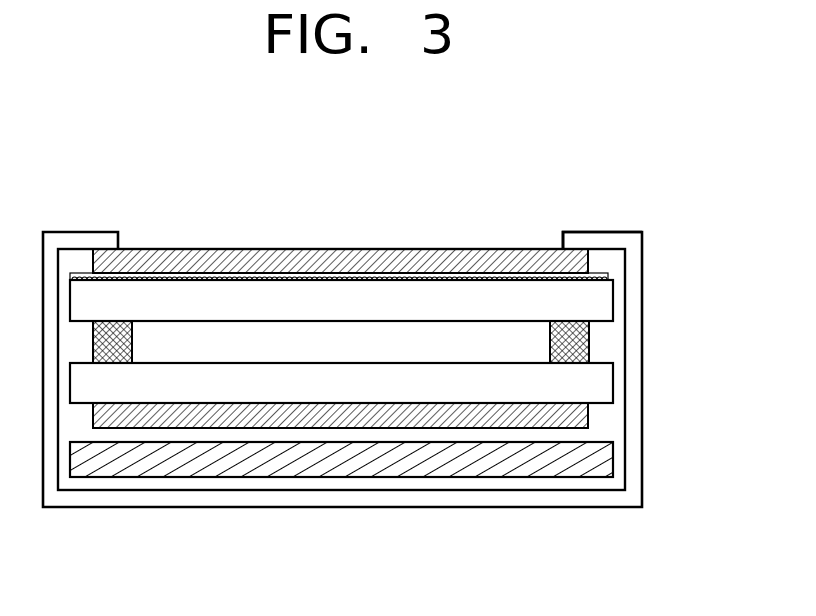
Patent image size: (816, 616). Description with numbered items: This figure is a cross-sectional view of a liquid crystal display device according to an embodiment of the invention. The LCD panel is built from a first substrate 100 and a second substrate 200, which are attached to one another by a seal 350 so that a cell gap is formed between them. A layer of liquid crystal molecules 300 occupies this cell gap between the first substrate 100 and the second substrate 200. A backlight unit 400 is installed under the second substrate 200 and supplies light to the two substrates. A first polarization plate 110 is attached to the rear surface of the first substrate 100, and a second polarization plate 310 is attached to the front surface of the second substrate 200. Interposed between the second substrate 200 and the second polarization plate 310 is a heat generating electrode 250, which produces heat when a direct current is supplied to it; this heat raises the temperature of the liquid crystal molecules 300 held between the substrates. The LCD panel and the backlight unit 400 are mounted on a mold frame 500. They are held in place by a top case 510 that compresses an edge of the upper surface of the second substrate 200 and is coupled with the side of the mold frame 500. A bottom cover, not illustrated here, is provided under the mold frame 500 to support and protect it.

The first substrate 100 is at (606, 387).
The first polarization plate 110 is at (565, 416).
The second substrate 200 is at (600, 310).
The heat generating electrode 250 is at (608, 273).
The liquid crystal molecules 300 is at (280, 340).
The second polarization plate 310 is at (588, 262).
The seal 350 is at (590, 345).
The backlight unit 400 is at (378, 462).
The mold frame 500 is at (633, 476).
The top case 510 is at (585, 240).